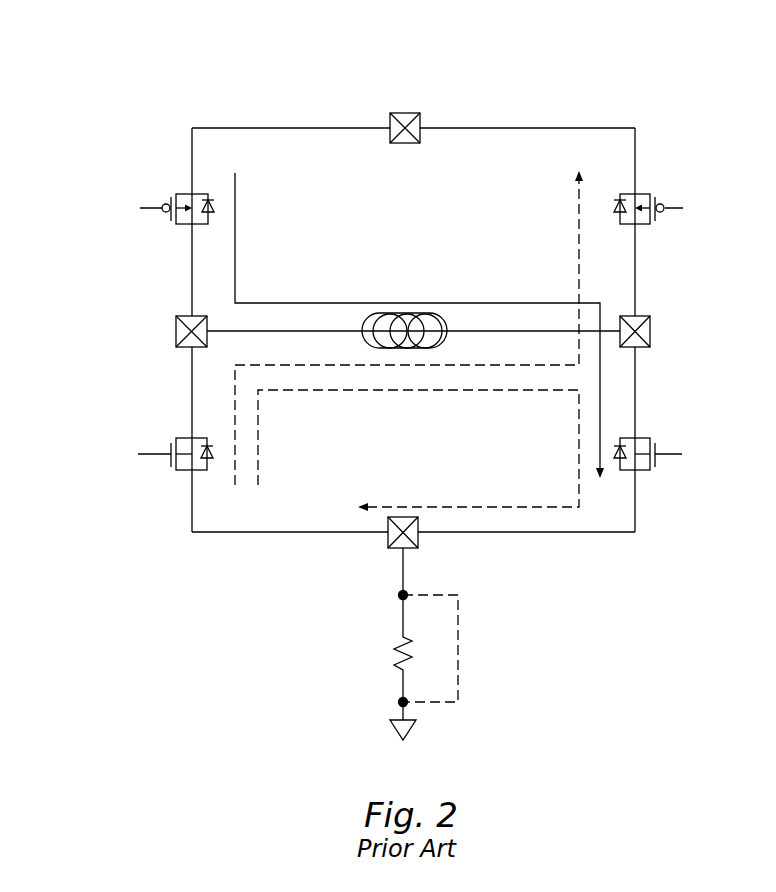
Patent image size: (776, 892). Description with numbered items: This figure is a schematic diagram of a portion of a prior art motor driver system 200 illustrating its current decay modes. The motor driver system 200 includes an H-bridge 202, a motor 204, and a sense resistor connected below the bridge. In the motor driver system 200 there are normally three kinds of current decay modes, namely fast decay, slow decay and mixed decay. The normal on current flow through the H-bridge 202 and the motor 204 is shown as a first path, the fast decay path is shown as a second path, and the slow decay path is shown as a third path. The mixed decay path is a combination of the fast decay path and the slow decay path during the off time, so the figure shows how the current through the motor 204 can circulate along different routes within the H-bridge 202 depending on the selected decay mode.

The motor driver system 200 is at (102, 63).
The H-bridge 202 is at (192, 108).
The motor 204 is at (440, 341).